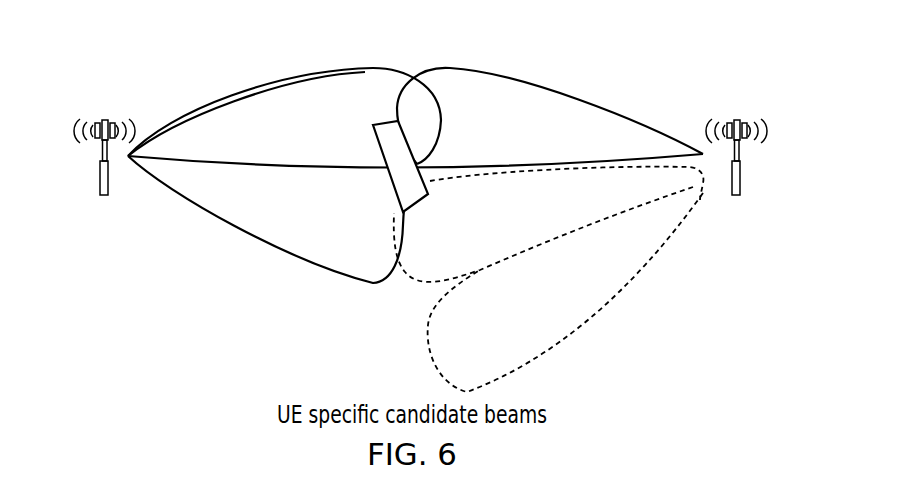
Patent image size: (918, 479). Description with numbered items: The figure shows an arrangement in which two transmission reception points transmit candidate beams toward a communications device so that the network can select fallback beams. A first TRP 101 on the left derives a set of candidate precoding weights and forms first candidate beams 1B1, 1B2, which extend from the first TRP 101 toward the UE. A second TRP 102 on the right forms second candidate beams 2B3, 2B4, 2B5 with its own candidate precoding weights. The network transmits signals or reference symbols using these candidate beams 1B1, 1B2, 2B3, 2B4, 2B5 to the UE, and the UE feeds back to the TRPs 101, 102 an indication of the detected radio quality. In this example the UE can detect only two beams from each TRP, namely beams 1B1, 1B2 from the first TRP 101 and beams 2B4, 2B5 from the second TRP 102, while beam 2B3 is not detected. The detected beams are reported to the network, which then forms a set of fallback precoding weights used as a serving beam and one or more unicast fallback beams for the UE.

The first TRP 101 is at (101, 145).
The second TRP 102 is at (744, 141).
The first candidate beam 1B1 is at (270, 219).
The first candidate beam 1B2 is at (284, 116).
The second candidate beam 2B3 is at (565, 292).
The second candidate beam 2B4 is at (549, 224).
The second candidate beam 2B5 is at (415, 118).